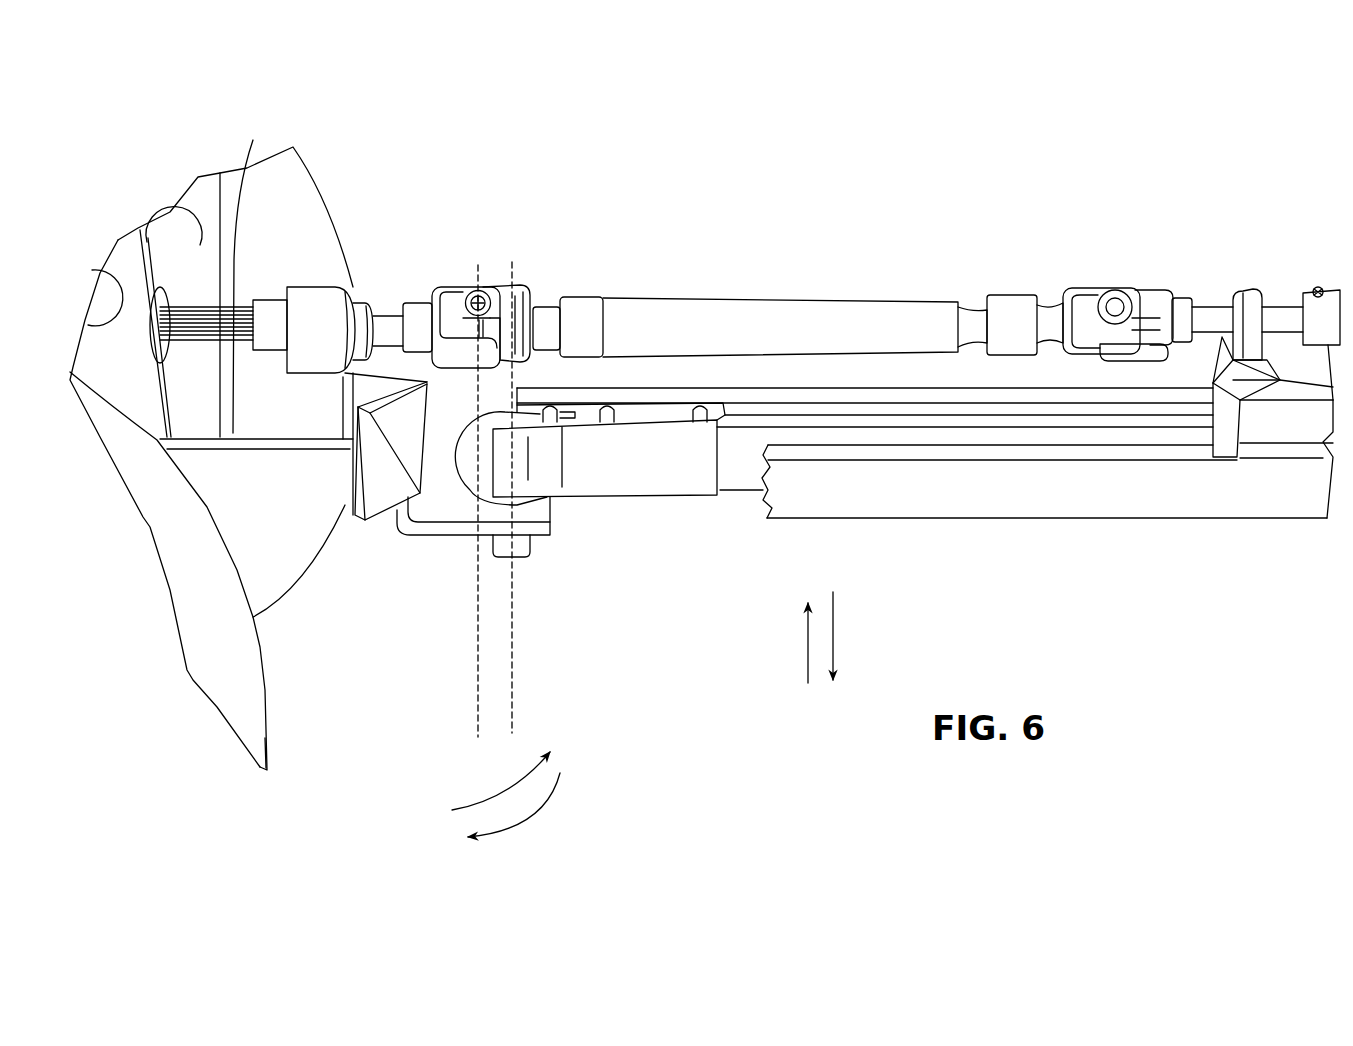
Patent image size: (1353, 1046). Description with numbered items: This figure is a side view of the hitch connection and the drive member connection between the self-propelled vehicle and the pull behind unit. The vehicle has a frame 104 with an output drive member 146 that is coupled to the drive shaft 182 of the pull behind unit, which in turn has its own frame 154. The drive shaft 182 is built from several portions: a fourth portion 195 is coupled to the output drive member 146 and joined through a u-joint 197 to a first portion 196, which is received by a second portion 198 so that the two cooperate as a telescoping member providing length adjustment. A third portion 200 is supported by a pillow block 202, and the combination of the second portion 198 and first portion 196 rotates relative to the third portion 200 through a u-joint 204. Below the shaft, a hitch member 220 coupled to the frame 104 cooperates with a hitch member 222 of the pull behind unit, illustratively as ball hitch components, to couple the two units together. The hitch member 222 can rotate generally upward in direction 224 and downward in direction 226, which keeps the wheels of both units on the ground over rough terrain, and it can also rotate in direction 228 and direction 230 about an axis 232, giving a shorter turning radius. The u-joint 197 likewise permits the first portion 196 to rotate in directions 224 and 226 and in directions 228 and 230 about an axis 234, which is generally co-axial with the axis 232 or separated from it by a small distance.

The frame 104 is at (211, 424).
The output drive member 146 is at (253, 140).
The frame 154 is at (1203, 537).
The drive shaft 182 is at (726, 240).
The fourth portion 195 is at (313, 305).
The first portion 196 is at (745, 315).
The first universal joint 197 is at (433, 276).
The second portion 198 is at (977, 323).
The third portion 200 is at (1213, 307).
The pillow block 202 is at (1247, 288).
The u-joint 204 is at (1122, 268).
The hitch member 220 is at (400, 550).
The hitch member 222 is at (603, 536).
The upward direction 224 is at (807, 642).
The downward direction 226 is at (835, 636).
The rotation direction 228 is at (500, 803).
The rotation direction 230 is at (535, 815).
The axis 232 is at (512, 647).
The axis 234 is at (450, 638).